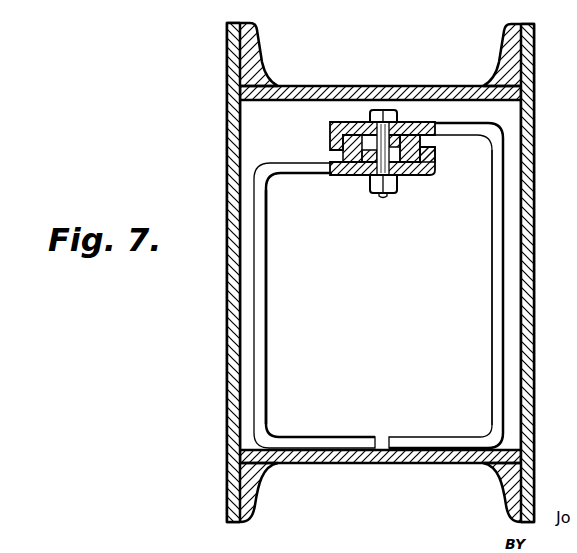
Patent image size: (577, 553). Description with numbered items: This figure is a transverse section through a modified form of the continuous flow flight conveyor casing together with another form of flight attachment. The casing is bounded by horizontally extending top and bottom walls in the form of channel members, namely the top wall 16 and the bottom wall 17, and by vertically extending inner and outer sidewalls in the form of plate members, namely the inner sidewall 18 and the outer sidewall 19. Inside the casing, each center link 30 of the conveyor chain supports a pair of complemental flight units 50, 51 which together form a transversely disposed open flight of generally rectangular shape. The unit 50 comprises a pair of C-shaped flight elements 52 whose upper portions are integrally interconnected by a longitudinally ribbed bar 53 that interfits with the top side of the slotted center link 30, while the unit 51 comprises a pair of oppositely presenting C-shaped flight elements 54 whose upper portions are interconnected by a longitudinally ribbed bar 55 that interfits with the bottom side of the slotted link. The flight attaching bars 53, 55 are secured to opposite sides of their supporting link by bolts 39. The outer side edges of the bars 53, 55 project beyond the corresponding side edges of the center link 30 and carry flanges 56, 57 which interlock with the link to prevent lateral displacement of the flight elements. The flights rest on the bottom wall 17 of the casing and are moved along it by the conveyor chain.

The top wall 16 is at (333, 85).
The bottom wall 17 is at (351, 460).
The inner sidewall 18 is at (230, 323).
The outer sidewall 19 is at (535, 331).
The flight unit 50 is at (446, 285).
The flight unit 51 is at (314, 305).
The C-shaped flight element 52 is at (492, 300).
The C-shaped flight element 54 is at (266, 316).
The longitudinally ribbed bar 53 is at (404, 123).
The bolt 39 is at (384, 199).
The longitudinally ribbed bar 55 is at (373, 175).
The flange 56 is at (330, 134).
The flange 57 is at (436, 153).
The center link 30 is at (418, 165).